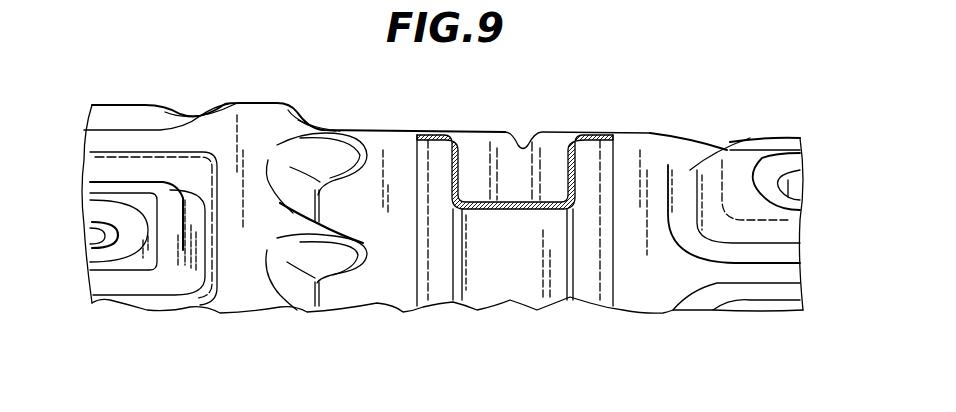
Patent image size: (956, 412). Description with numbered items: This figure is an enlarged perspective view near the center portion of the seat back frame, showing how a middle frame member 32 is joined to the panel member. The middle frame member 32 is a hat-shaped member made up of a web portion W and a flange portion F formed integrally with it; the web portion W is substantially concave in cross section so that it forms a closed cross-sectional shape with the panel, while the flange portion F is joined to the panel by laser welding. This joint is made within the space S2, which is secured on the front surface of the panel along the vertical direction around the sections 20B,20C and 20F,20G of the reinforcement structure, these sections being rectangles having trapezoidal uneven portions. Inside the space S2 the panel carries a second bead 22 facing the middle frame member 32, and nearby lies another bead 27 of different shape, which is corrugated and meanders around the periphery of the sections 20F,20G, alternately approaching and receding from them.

The second bead 22 is at (514, 160).
The space for joining the middle frame member S2 is at (619, 157).
The sections of the reinforcement structure 20F,20G is at (747, 157).
The sections of the reinforcement structure 20B,20C is at (132, 285).
The other bead 27 is at (305, 300).
The flange portion F is at (432, 302).
The web portion W is at (492, 295).
The middle frame member 32 is at (532, 295).